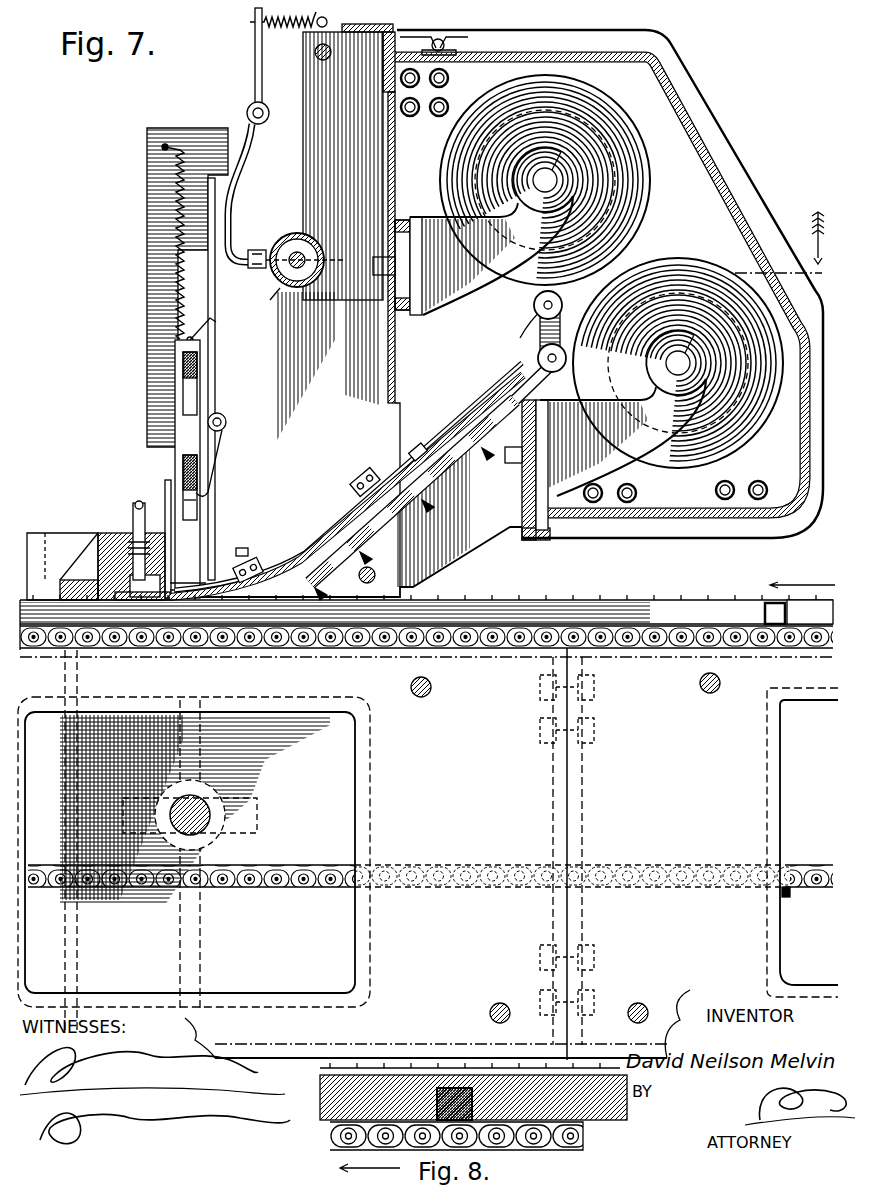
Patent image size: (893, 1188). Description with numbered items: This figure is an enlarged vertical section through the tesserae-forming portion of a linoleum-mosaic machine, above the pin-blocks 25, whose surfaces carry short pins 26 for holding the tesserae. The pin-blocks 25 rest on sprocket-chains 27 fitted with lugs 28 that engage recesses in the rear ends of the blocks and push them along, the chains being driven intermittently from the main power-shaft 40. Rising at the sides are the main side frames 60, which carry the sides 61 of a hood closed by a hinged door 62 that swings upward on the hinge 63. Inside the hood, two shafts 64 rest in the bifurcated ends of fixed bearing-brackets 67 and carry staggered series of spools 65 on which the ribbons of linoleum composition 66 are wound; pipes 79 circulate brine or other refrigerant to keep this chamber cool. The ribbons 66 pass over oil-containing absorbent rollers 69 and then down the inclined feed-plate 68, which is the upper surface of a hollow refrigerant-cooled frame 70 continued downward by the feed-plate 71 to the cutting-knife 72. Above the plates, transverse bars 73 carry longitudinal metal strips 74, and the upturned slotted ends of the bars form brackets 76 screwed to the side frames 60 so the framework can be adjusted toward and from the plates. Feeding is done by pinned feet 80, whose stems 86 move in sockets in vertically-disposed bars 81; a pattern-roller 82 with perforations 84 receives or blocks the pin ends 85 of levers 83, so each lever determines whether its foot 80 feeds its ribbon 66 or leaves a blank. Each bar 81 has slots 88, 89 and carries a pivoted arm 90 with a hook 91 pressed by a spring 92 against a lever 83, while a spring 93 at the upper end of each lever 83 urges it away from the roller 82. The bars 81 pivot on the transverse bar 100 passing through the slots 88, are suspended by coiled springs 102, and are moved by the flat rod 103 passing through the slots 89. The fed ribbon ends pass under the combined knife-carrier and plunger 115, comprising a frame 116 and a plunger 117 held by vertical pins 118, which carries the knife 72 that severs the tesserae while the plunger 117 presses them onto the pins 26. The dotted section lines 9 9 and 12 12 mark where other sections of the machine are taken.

In FIG. 7, the section line 9 9 is at (784, 244).
In FIG. 7, the section line 12 12 is at (292, 682).
In FIG. 7, the pin-blocks 25 is at (745, 603).
In FIG. 8, the pin-blocks 25 is at (458, 1097).
In FIG. 7, the pins 26 is at (428, 602).
In FIG. 8, the pins 26 is at (470, 1061).
In FIG. 7, the sprocket-chains 27 is at (497, 638).
In FIG. 8, the sprocket-chains 27 is at (555, 1150).
In FIG. 7, the lugs 28 is at (770, 624).
In FIG. 8, the lugs 28 is at (470, 1090).
In FIG. 7, the main power-shaft 40 is at (205, 832).
In FIG. 7, the main side frames 60 is at (346, 303).
In FIG. 7, the sides of inclosing frame 61 is at (600, 298).
In FIG. 7, the hinged door 62 is at (748, 210).
In FIG. 7, the hinge 63 is at (441, 38).
In FIG. 7, the shafts 64 is at (548, 182).
In FIG. 7, the spools 65 is at (645, 168).
In FIG. 7, the ribbons or strips of linoleum composition 66 is at (520, 338).
In FIG. 7, the bearing-brackets 67 is at (539, 344).
In FIG. 7, the feed-plate 68 is at (440, 445).
In FIG. 7, the rollers 69 is at (558, 294).
In FIG. 7, the hollow frame 70 is at (490, 452).
In FIG. 7, the feed-plate 71 is at (281, 591).
In FIG. 7, the cutting-knife 72 is at (187, 469).
In FIG. 7, the transverse bars 73 is at (352, 492).
In FIG. 7, the longitudinal strips 74 is at (312, 548).
In FIG. 7, the brackets 76 is at (368, 470).
In FIG. 7, the pipes 79 is at (443, 98).
In FIG. 7, the feet 80 is at (204, 585).
In FIG. 7, the vertically-disposed bars 81 is at (160, 440).
In FIG. 7, the pattern-roller 82 is at (297, 233).
In FIG. 7, the levers 83 is at (262, 160).
In FIG. 7, the perforations 84 is at (271, 303).
In FIG. 7, the pin ends 85 is at (257, 248).
In FIG. 7, the stems 86 is at (198, 560).
In FIG. 7, the vertical slot 88 is at (188, 398).
In FIG. 7, the vertical slot 89 is at (188, 508).
In FIG. 7, the arm 90 is at (216, 356).
In FIG. 7, the hook 91 is at (212, 488).
In FIG. 7, the spring 92 is at (204, 331).
In FIG. 7, the spring 93 is at (288, 13).
In FIG. 7, the bar 100 is at (198, 371).
In FIG. 7, the coiled spring 102 is at (172, 262).
In FIG. 7, the flat rod 103 is at (182, 470).
In FIG. 7, the combined knife-carrier and plunger 115 is at (122, 540).
In FIG. 7, the frame 116 is at (92, 533).
In FIG. 7, the plunger 117 is at (135, 600).
In FIG. 7, the vertical pins 118 is at (133, 505).